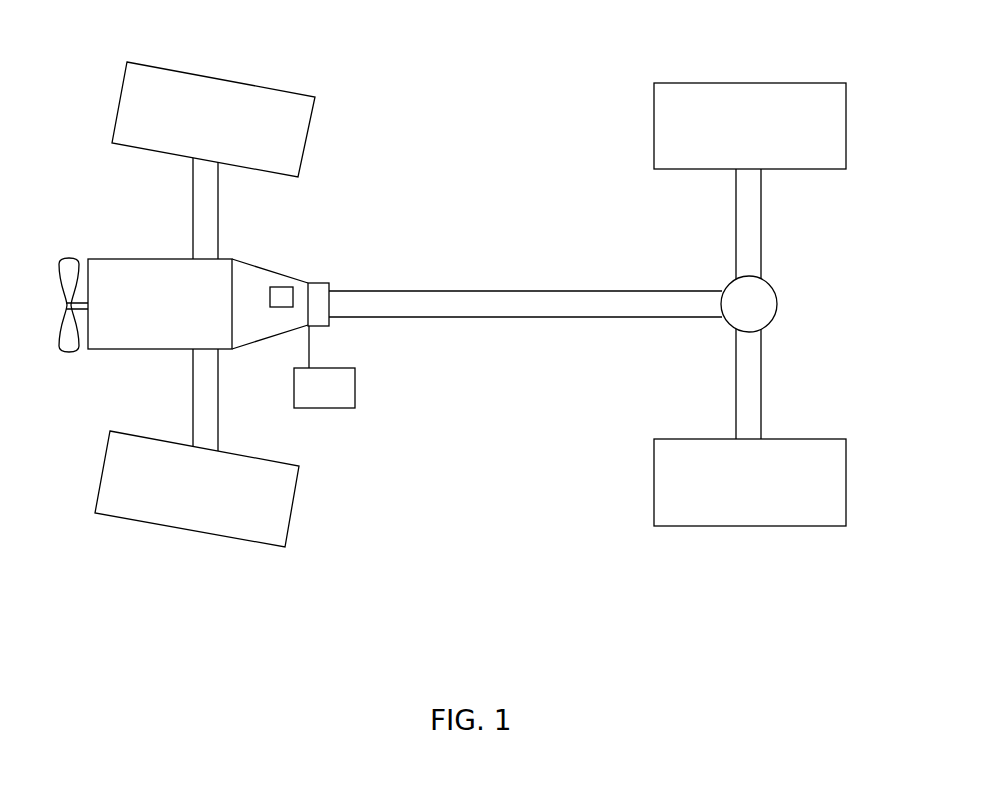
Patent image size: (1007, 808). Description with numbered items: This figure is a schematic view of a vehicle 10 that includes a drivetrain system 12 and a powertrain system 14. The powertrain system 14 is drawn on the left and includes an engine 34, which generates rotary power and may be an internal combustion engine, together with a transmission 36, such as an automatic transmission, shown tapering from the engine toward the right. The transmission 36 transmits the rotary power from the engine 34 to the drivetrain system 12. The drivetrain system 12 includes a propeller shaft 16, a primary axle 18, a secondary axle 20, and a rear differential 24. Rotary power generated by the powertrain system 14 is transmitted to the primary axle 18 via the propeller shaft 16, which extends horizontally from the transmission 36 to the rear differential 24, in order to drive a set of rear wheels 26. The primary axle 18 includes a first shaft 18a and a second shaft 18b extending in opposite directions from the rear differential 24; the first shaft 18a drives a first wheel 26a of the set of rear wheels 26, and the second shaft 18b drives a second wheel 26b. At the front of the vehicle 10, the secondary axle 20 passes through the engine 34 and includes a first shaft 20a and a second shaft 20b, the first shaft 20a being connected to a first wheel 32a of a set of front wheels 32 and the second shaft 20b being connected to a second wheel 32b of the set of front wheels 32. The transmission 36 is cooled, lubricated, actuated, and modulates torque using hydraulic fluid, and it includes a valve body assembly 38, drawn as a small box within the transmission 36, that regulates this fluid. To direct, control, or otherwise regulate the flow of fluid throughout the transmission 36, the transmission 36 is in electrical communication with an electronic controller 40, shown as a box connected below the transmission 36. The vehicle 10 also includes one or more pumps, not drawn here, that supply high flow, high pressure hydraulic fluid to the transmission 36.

The vehicle 10 is at (525, 58).
The drivetrain system 12 is at (453, 257).
The powertrain system 14 is at (100, 218).
The propeller shaft 16 is at (470, 317).
The primary axle 18 is at (762, 238).
The first shaft 18a is at (761, 213).
The second shaft 18b is at (761, 383).
The secondary axle 20 is at (219, 210).
The first shaft 20a is at (193, 194).
The second shaft 20b is at (193, 407).
The rear differential 24 is at (776, 292).
The set of rear wheels 26 is at (849, 115).
The first wheel 26a is at (773, 83).
The second wheel 26b is at (846, 483).
The set of front wheels 32 is at (317, 118).
The first wheel 32a is at (181, 68).
The second wheel 32b is at (181, 528).
The engine 34 is at (100, 350).
The transmission 36 is at (255, 263).
The valve body assembly 38 is at (286, 297).
The electronic controller 40 is at (330, 408).